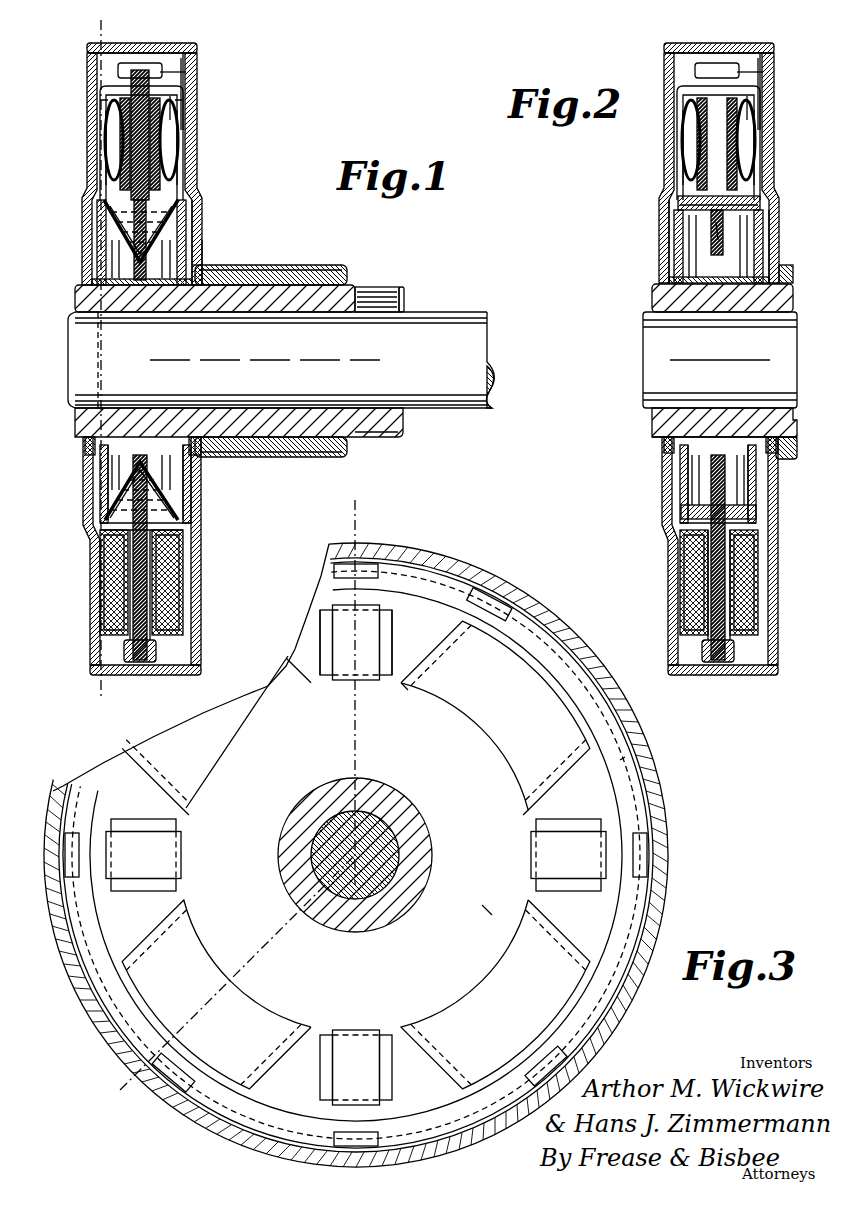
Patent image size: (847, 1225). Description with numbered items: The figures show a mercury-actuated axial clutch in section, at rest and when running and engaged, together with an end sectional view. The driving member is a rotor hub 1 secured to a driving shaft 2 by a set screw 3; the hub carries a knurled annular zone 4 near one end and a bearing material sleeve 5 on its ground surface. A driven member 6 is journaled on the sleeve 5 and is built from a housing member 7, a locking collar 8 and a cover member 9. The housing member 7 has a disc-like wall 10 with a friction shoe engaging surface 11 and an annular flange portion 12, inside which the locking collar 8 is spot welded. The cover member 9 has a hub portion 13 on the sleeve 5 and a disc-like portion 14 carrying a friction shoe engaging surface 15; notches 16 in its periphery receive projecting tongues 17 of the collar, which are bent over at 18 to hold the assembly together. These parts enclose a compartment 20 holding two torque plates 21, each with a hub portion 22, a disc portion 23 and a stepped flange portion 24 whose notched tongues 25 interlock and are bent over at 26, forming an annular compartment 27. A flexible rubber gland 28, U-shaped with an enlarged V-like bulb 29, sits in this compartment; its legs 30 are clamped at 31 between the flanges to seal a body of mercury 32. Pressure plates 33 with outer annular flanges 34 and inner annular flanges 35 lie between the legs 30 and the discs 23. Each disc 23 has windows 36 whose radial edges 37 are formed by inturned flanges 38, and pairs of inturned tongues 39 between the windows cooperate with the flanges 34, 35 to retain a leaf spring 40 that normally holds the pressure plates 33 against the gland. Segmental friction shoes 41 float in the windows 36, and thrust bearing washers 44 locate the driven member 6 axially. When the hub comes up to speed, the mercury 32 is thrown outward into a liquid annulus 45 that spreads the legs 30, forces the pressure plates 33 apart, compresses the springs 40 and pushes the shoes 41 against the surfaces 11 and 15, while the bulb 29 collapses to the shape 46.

In FIG. 1, the rotor hub 1 is at (382, 437).
In FIG. 2, the rotor hub 1 is at (660, 422).
In FIG. 3, the rotor hub 1 is at (420, 855).
In FIG. 1, the driving shaft 2 is at (480, 344).
In FIG. 2, the driving shaft 2 is at (660, 370).
In FIG. 3, the driving shaft 2 is at (420, 830).
In FIG. 1, the set screw 3 is at (382, 292).
In FIG. 1, the knurled annular zone 4 is at (135, 292).
In FIG. 2, the knurled annular zone 4 is at (722, 440).
In FIG. 1, the bearing material sleeve 5 is at (300, 457).
In FIG. 2, the bearing material sleeve 5 is at (796, 458).
In FIG. 1, the driven member 6 is at (204, 245).
In FIG. 2, the driven member 6 is at (660, 56).
In FIG. 3, the driven member 6 is at (660, 785).
In FIG. 1, the housing member 7 is at (84, 202).
In FIG. 2, the housing member 7 is at (662, 202).
In FIG. 1, the locking collar 8 is at (172, 43).
In FIG. 2, the locking collar 8 is at (750, 43).
In FIG. 3, the locking collar 8 is at (578, 645).
In FIG. 1, the cover member 9 is at (200, 212).
In FIG. 2, the cover member 9 is at (778, 230).
In FIG. 1, the disc-like wall 10 is at (100, 162).
In FIG. 2, the disc-like wall 10 is at (677, 156).
In FIG. 1, the friction shoe engaging surface 11 is at (105, 125).
In FIG. 2, the friction shoe engaging surface 11 is at (683, 125).
In FIG. 1, the annular flange portion 12 is at (128, 43).
In FIG. 2, the annular flange portion 12 is at (700, 43).
In FIG. 3, the annular flange portion 12 is at (546, 612).
In FIG. 1, the hub portion 13 is at (290, 265).
In FIG. 1, the disc-like portion 14 is at (185, 135).
In FIG. 2, the disc-like portion 14 is at (762, 135).
In FIG. 1, the friction shoe engaging surface 15 is at (175, 128).
In FIG. 2, the friction shoe engaging surface 15 is at (752, 128).
In FIG. 1, the notches 16 is at (186, 78).
In FIG. 2, the notches 16 is at (764, 78).
In FIG. 1, the projecting tongues 17 is at (197, 50).
In FIG. 2, the projecting tongues 17 is at (775, 52).
In FIG. 1, the bent-over portion 18 is at (190, 62).
In FIG. 2, the bent-over portion 18 is at (767, 62).
In FIG. 1, the compartment 20 is at (110, 64).
In FIG. 2, the compartment 20 is at (688, 66).
In FIG. 1, the torque plates 21 is at (104, 255).
In FIG. 2, the torque plates 21 is at (700, 225).
In FIG. 3, the torque plates 21 is at (470, 918).
In FIG. 1, the hub portion 22 is at (93, 446).
In FIG. 2, the hub portion 22 is at (790, 444).
In FIG. 1, the disc portion 23 is at (188, 235).
In FIG. 2, the disc portion 23 is at (760, 243).
In FIG. 3, the disc portion 23 is at (582, 790).
In FIG. 1, the stepped flange portion 24 is at (150, 82).
In FIG. 2, the stepped flange portion 24 is at (728, 82).
In FIG. 3, the stepped flange portion 24 is at (420, 590).
In FIG. 1, the notched tongues 25 is at (135, 672).
In FIG. 2, the notched tongues 25 is at (728, 672).
In FIG. 3, the notched tongues 25 is at (58, 958).
In FIG. 1, the bent-over tongue ends 26 is at (160, 650).
In FIG. 2, the bent-over tongue ends 26 is at (740, 652).
In FIG. 3, the bent-over tongue ends 26 is at (500, 602).
In FIG. 1, the annular compartment 27 is at (102, 470).
In FIG. 2, the annular compartment 27 is at (688, 490).
In FIG. 1, the gland 28 is at (108, 210).
In FIG. 2, the gland 28 is at (690, 208).
In FIG. 1, the V-like bulb 29 is at (125, 258).
In FIG. 1, the legs 30 is at (120, 170).
In FIG. 2, the legs 30 is at (697, 175).
In FIG. 1, the clamping point 31 is at (148, 60).
In FIG. 2, the clamping point 31 is at (714, 662).
In FIG. 1, the body of mercury 32 is at (175, 505).
In FIG. 1, the pressure plates 33 is at (105, 572).
In FIG. 2, the pressure plates 33 is at (690, 568).
In FIG. 1, the outer annular flanges 34 is at (160, 600).
In FIG. 1, the inner annular flanges 35 is at (183, 548).
In FIG. 2, the inner annular flanges 35 is at (690, 538).
In FIG. 1, the windows 36 is at (100, 545).
In FIG. 2, the windows 36 is at (760, 625).
In FIG. 3, the windows 36 is at (520, 982).
In FIG. 3, the radial edges 37 is at (295, 680).
In FIG. 3, the inturned flanges 38 is at (160, 945).
In FIG. 1, the inturned tongues 39 is at (102, 100).
In FIG. 3, the inturned tongues 39 is at (325, 644).
In FIG. 1, the leaf spring 40 is at (178, 118).
In FIG. 2, the leaf spring 40 is at (690, 112).
In FIG. 1, the friction shoes 41 is at (108, 600).
In FIG. 2, the friction shoes 41 is at (690, 592).
In FIG. 3, the friction shoes 41 is at (356, 855).
In FIG. 1, the thrust bearing washers 44 is at (200, 262).
In FIG. 2, the thrust bearing washers 44 is at (680, 270).
In FIG. 2, the liquid annulus 45 is at (765, 196).
In FIG. 2, the collapsed bulb shape 46 is at (716, 222).